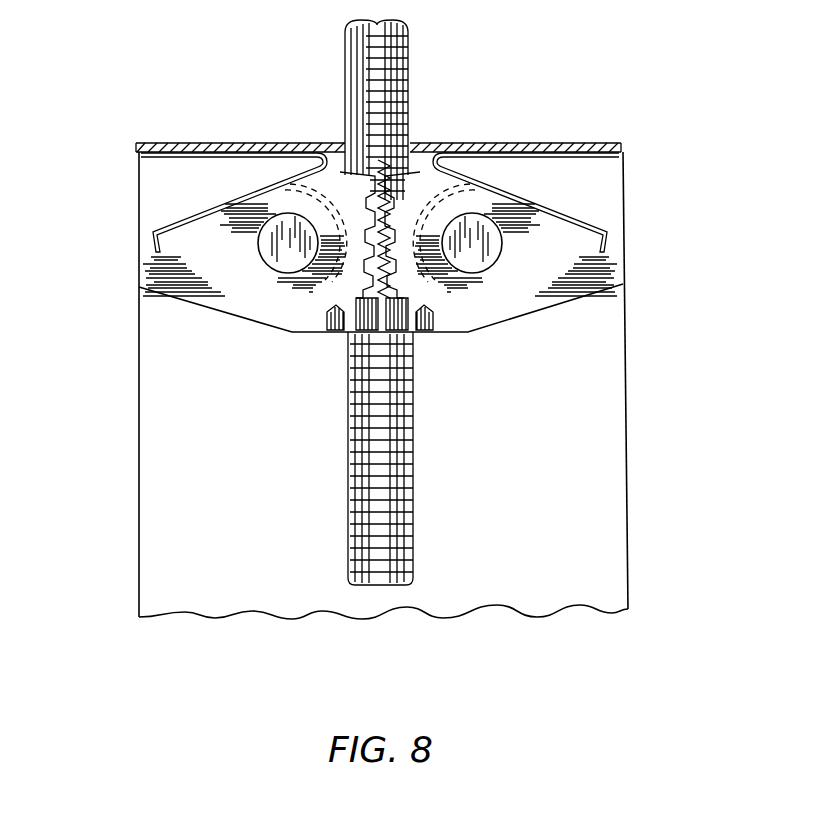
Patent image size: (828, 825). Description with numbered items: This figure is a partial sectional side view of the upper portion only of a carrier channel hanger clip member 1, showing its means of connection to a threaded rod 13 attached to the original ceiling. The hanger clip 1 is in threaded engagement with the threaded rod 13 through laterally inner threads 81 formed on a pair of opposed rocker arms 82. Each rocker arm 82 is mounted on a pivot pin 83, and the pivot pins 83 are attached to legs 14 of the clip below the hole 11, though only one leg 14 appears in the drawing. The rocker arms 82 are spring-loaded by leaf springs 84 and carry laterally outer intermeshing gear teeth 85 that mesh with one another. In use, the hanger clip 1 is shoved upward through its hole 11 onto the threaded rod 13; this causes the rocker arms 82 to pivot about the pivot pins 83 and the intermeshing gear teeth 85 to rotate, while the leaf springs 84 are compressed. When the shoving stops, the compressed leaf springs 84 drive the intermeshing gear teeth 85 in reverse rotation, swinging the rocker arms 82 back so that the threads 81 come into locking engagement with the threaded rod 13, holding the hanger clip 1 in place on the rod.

The hanger clip member 1 is at (641, 247).
The hole 11 is at (410, 148).
The threaded rod 13 is at (408, 60).
The legs 14 is at (170, 483).
The laterally inner threads 81 is at (383, 257).
The rocker arms 82 is at (232, 292).
The pivot pins 83 is at (273, 247).
The leaf springs 84 is at (228, 205).
The intermeshing gear teeth 85 is at (368, 225).